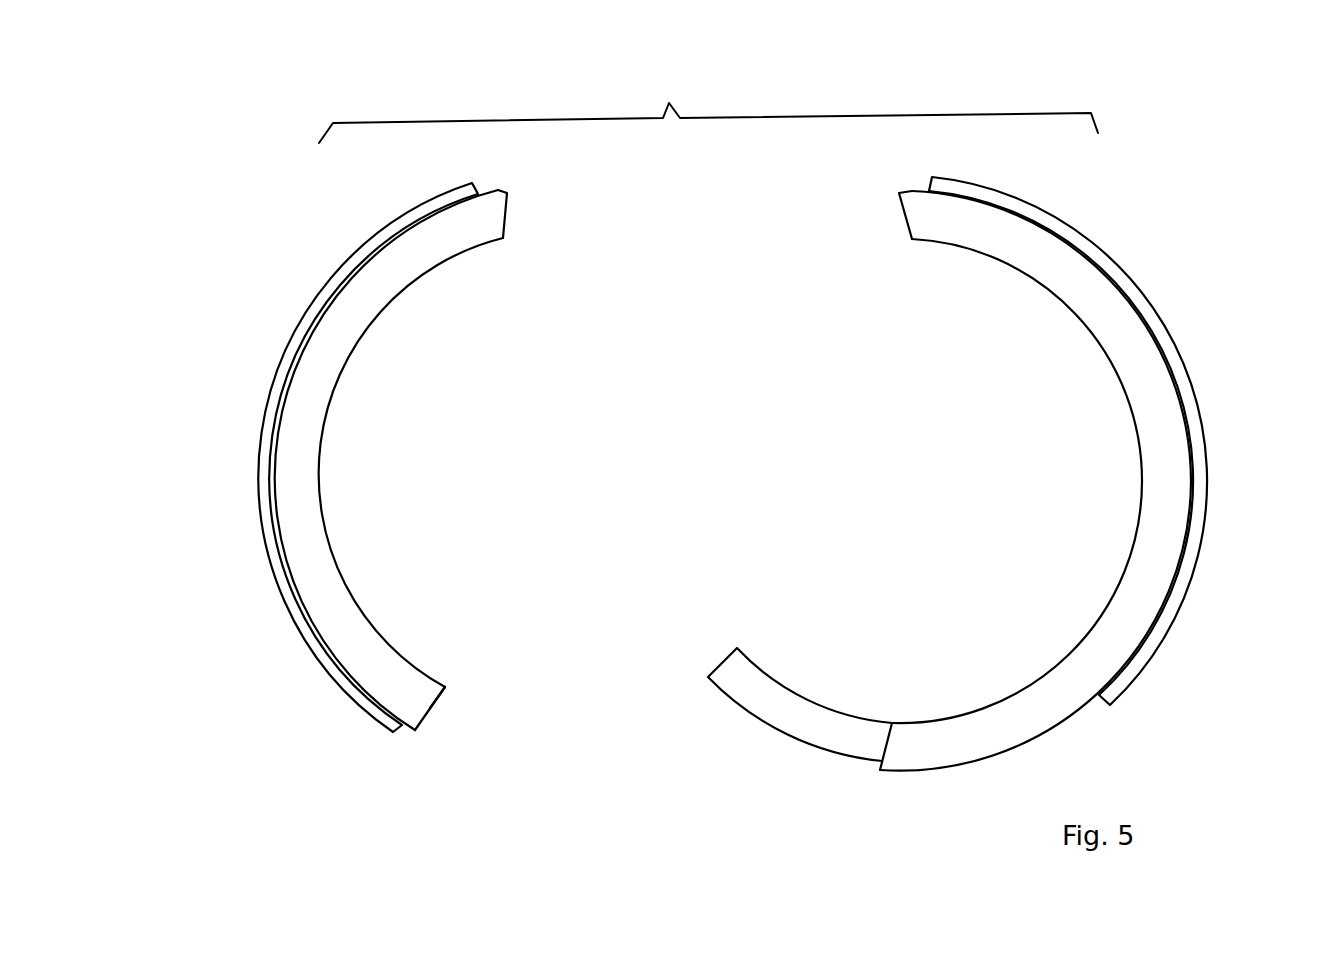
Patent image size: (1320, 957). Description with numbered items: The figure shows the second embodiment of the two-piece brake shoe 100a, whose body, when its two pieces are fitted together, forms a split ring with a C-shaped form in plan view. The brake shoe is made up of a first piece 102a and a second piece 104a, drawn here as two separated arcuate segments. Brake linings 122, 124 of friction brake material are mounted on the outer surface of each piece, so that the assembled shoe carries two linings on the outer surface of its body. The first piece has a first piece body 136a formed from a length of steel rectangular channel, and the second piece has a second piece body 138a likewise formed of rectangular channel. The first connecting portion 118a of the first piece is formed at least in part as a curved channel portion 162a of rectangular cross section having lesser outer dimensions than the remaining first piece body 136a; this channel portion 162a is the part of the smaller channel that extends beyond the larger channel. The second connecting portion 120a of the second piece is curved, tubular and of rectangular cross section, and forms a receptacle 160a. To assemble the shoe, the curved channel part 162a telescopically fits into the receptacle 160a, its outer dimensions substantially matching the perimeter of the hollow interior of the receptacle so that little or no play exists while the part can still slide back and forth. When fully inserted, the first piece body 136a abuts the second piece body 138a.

The two-piece brake shoe 100a is at (708, 98).
The first piece 102a is at (1006, 536).
The second piece 104a is at (427, 505).
The first connecting portion 118a is at (889, 796).
The second connecting portion 120a is at (468, 676).
The brake lining 122 is at (1202, 513).
The brake lining 124 is at (262, 491).
The first piece body 136a is at (1160, 418).
The second piece body 138a is at (320, 550).
The receptacle 160a is at (451, 715).
The channel portion 162a is at (777, 702).